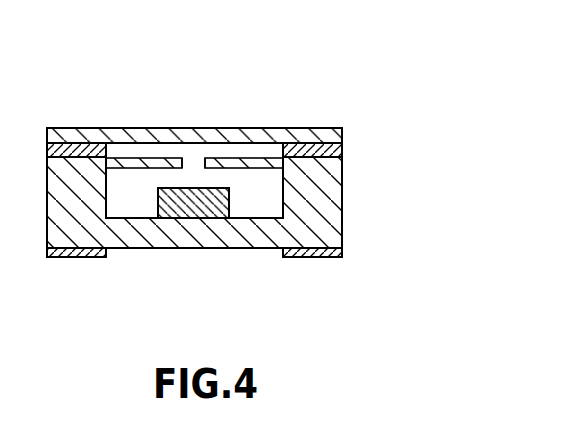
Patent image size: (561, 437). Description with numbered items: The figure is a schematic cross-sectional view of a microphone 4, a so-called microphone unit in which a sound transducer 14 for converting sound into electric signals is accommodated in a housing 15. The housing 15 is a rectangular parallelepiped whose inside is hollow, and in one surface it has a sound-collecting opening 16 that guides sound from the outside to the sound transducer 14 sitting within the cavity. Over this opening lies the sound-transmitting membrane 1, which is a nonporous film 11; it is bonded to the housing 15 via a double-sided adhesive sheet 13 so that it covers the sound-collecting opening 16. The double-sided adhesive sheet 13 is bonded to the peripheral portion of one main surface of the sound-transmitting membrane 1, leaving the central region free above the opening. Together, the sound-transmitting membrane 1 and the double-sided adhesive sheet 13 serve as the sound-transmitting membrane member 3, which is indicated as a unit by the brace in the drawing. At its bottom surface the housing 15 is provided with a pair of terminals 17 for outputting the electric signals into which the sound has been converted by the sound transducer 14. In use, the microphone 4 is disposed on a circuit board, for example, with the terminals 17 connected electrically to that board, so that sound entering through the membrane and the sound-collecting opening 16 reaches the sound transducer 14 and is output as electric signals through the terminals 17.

The microphone 4 is at (333, 82).
The sound-transmitting membrane member 3 is at (278, 135).
The sound-transmitting membrane 1 is at (246, 121).
The nonporous film 11 is at (330, 137).
The double-sided adhesive sheet 13 is at (328, 150).
The housing 15 is at (325, 215).
The sound-collecting opening 16 is at (192, 159).
The sound transducer 14 is at (209, 200).
The terminals 17 is at (83, 257).